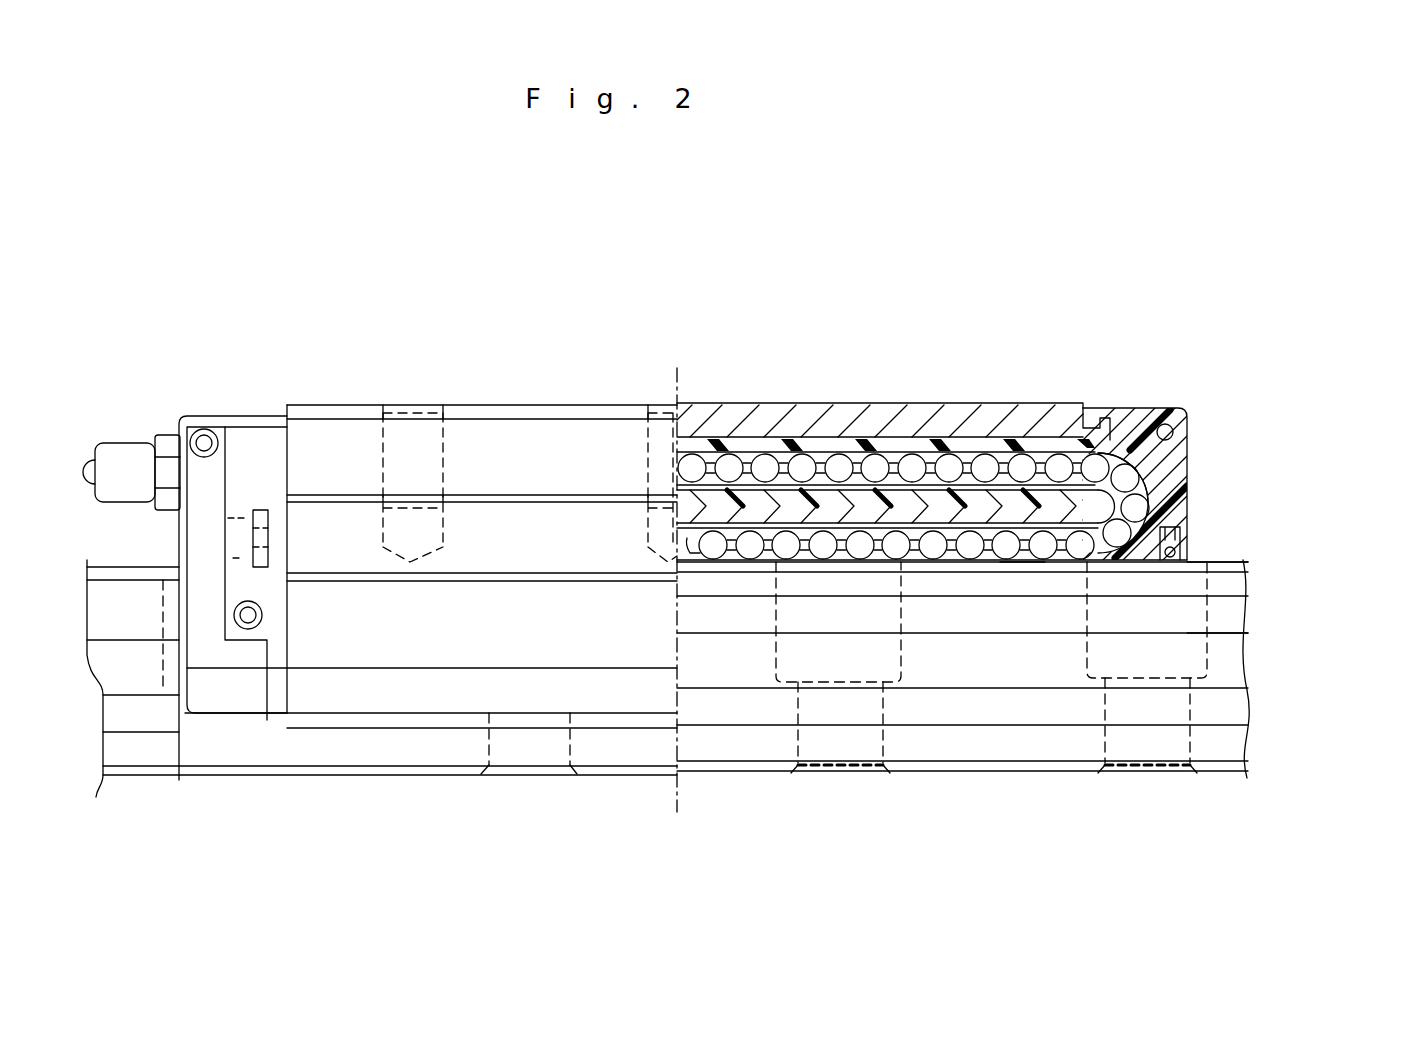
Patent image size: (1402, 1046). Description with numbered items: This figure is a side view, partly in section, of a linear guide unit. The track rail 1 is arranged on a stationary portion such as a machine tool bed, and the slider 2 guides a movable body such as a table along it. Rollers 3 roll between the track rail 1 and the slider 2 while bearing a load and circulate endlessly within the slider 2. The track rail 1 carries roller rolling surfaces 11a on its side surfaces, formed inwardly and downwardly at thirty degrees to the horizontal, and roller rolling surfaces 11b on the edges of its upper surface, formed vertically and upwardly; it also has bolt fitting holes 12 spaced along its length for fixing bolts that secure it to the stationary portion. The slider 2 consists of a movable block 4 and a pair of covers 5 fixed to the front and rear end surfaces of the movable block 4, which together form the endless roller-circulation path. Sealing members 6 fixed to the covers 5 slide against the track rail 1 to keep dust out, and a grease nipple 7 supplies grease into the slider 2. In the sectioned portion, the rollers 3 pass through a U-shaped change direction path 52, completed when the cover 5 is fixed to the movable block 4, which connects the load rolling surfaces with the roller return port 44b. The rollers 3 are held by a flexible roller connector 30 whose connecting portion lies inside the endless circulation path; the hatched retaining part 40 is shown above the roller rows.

The track rail 1 is at (417, 784).
The slider 2 is at (548, 396).
The rollers 3 is at (876, 468).
The movable block 4 is at (967, 396).
The covers 5 is at (205, 422).
The sealing members 6 is at (1188, 545).
The grease nipple 7 is at (136, 452).
The roller rolling surfaces 11a is at (1225, 610).
The roller rolling surfaces 11b is at (1238, 562).
The bolt fitting holes 12 is at (797, 742).
The roller connector 30 is at (1022, 572).
The ball retainer 40 is at (924, 403).
The roller return port 44b is at (1008, 465).
The change direction path 52 is at (1120, 447).